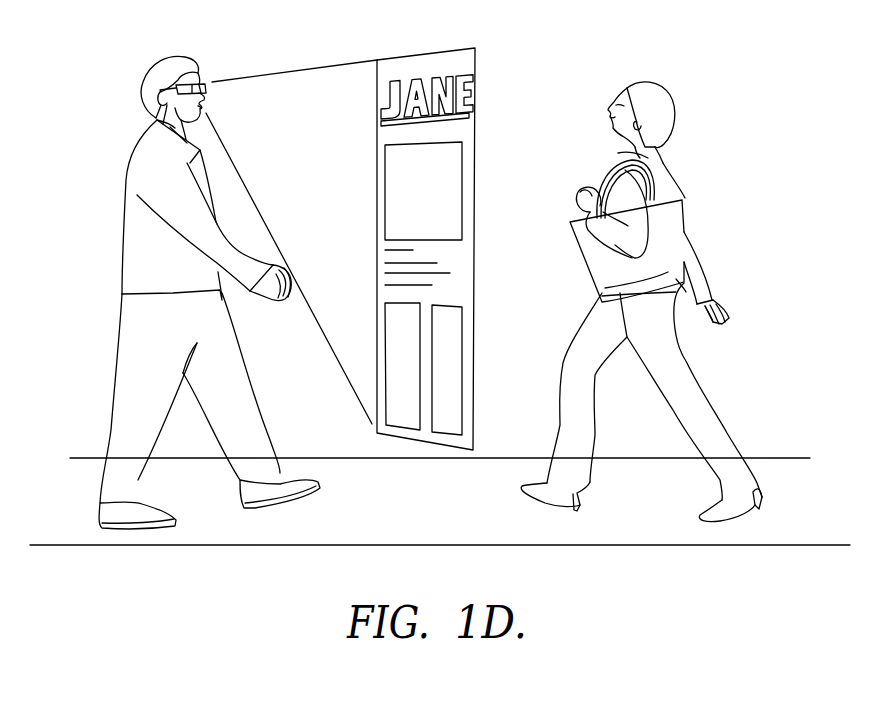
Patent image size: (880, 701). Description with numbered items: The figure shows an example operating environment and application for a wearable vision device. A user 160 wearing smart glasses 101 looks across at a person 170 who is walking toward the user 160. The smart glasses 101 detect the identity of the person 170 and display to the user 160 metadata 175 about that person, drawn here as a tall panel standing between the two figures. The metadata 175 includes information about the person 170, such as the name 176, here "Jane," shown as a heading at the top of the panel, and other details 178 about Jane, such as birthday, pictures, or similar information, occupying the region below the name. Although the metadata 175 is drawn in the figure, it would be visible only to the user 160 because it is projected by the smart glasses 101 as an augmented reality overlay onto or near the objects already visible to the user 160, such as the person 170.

The smart glasses 101 is at (210, 81).
The user 160 is at (168, 55).
The person 170 is at (642, 85).
The metadata 175 is at (422, 53).
The name 176 is at (468, 97).
The other details 178 is at (480, 436).